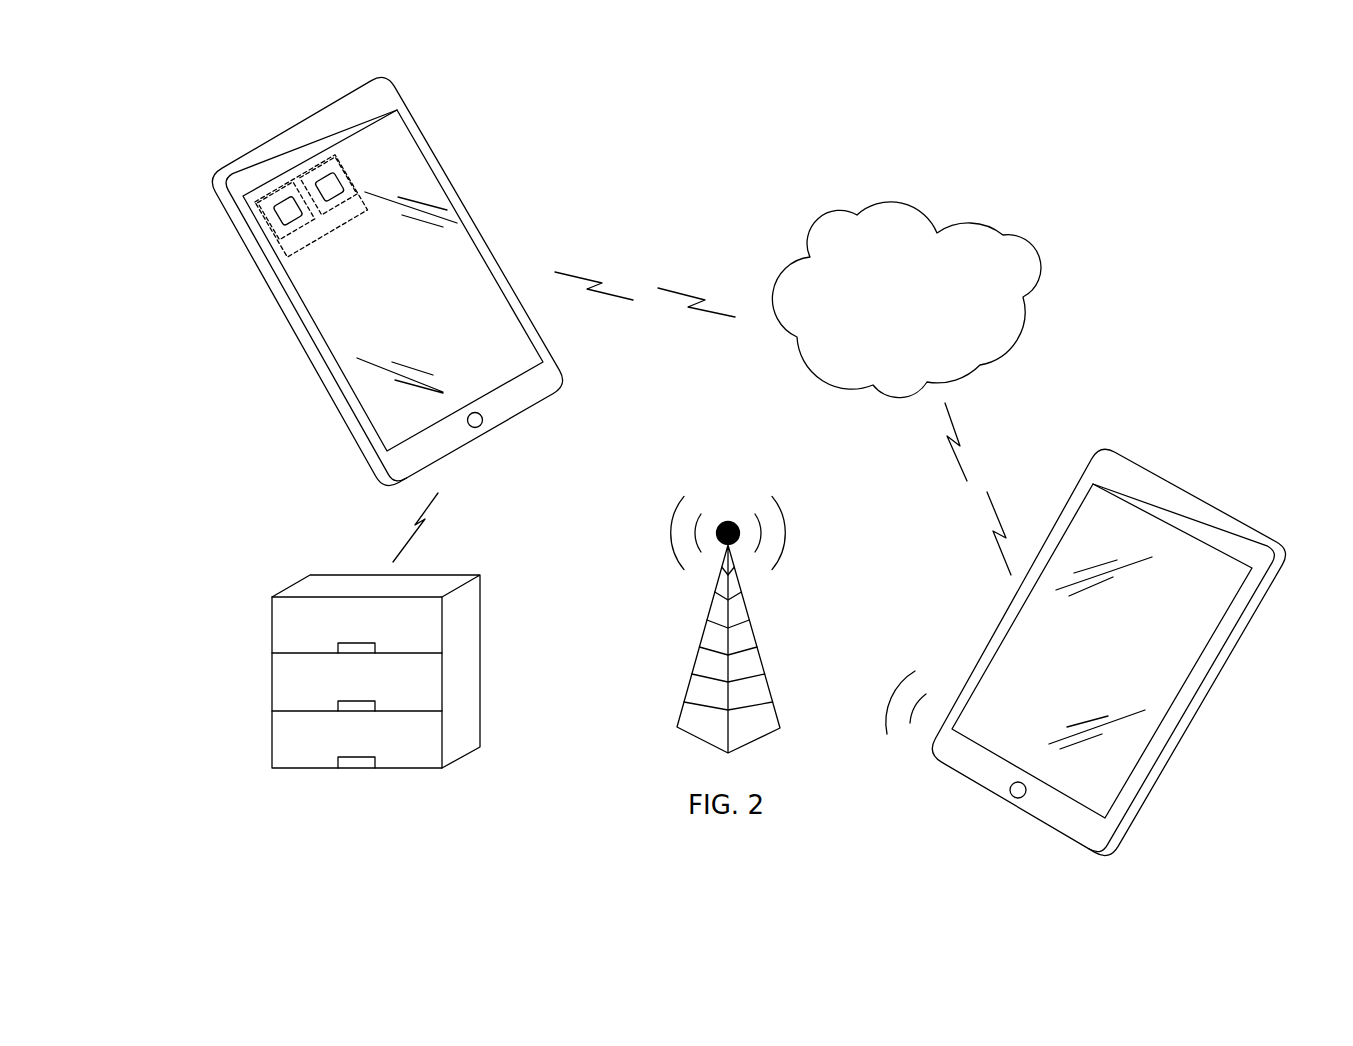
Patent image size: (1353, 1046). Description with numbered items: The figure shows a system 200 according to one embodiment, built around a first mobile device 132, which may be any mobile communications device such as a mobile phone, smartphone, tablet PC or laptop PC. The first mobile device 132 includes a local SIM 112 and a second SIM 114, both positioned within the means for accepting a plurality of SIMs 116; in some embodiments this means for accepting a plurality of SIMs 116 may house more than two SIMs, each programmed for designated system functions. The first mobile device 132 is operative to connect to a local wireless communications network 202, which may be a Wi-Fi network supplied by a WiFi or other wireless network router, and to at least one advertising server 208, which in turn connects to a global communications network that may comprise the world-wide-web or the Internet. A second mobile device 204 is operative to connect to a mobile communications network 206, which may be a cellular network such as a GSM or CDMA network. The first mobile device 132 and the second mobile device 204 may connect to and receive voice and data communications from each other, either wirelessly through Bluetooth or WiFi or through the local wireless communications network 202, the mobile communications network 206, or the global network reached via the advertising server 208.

The local SIM 112 is at (284, 208).
The second SIM 114 is at (315, 174).
The means for accepting a plurality of SIMs 116 is at (290, 252).
The first mobile device 132 is at (436, 159).
The system 200 is at (774, 139).
The local wireless communications network 202 is at (889, 314).
The second mobile device 204 is at (1179, 484).
The mobile communications network 206 is at (708, 622).
The advertising server 208 is at (467, 679).